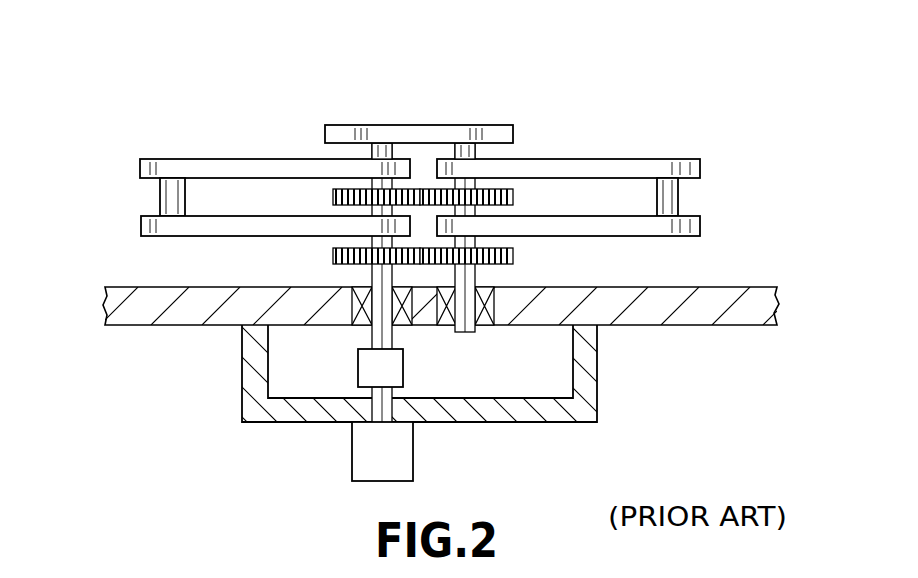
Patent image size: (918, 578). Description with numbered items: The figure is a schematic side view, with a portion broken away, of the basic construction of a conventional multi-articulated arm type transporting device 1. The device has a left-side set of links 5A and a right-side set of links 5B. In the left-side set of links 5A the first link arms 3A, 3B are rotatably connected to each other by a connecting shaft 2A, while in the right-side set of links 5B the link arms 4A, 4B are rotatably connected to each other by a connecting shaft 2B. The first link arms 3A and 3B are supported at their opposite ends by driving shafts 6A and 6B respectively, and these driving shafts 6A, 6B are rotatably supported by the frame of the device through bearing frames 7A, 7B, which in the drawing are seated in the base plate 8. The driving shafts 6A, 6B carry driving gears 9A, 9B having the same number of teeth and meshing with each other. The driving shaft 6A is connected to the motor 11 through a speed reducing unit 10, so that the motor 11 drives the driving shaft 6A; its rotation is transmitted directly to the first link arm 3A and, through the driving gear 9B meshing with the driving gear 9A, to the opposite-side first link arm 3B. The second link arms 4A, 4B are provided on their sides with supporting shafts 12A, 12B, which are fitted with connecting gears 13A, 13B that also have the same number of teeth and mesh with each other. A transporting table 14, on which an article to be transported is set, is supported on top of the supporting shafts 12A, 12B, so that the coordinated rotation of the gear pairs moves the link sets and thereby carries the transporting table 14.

The multi-articulated arm type transporting device 1 is at (657, 113).
The connecting shaft 2A is at (175, 200).
The connecting shaft 2B is at (670, 196).
The first link arm 3A is at (249, 239).
The first link arm 3B is at (596, 239).
The second link arm 4A is at (197, 164).
The second link arm 4B is at (672, 166).
The left-side set of links 5A is at (210, 193).
The right-side set of links 5B is at (633, 192).
The driving shaft 6A is at (268, 327).
The driving shaft 6B is at (462, 333).
The bearing frame 7A is at (363, 327).
The bearing frame 7B is at (483, 327).
The base plate 8 is at (748, 305).
The driving gear 9A is at (332, 254).
The driving gear 9B is at (513, 252).
The speed reducing unit 10 is at (367, 370).
The motor 11 is at (407, 458).
The supporting shaft 12A is at (370, 150).
The supporting shaft 12B is at (477, 150).
The connecting gear 13A is at (332, 197).
The connecting gear 13B is at (513, 197).
The transporting table 14 is at (427, 127).